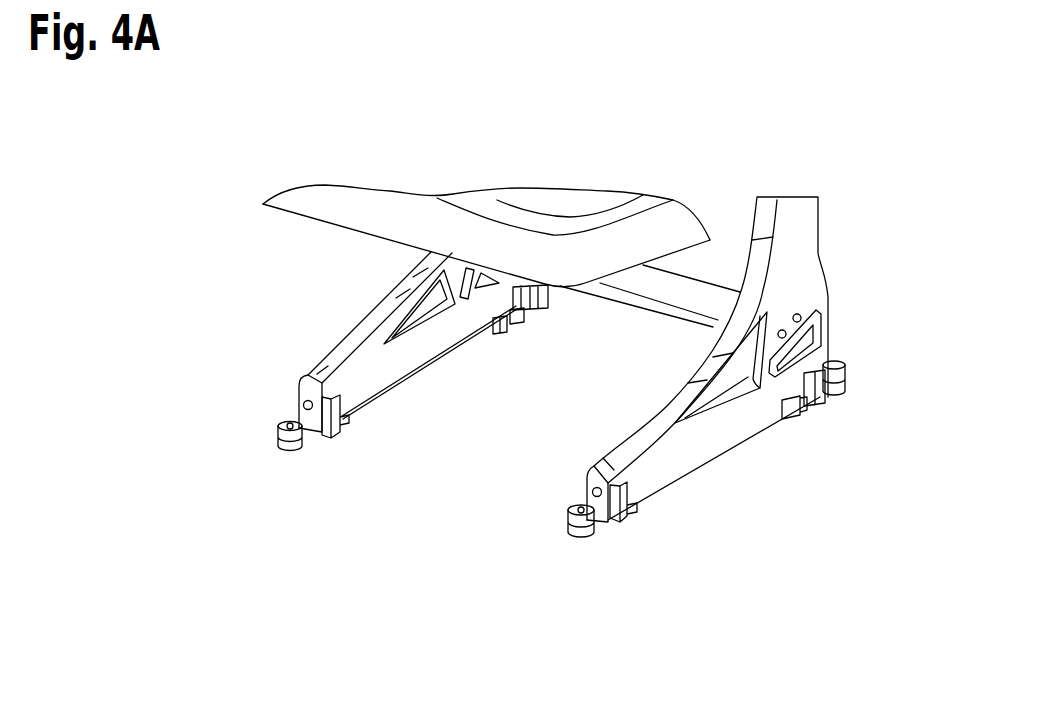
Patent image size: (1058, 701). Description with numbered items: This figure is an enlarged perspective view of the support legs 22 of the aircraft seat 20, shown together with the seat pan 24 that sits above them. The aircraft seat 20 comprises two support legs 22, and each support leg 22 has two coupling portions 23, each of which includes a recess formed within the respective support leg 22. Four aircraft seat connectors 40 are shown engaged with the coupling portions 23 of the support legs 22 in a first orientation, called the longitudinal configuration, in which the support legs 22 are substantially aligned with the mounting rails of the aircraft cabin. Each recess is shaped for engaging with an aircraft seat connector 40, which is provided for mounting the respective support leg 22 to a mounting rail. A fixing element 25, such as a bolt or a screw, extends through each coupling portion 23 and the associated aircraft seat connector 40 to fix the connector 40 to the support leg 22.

The aircraft seat 20 is at (740, 128).
The support leg 22 is at (705, 486).
The coupling portion 23 is at (353, 432).
The seat pan 24 is at (318, 212).
The fixing element 25 is at (296, 398).
The aircraft seat connector 40 is at (271, 473).